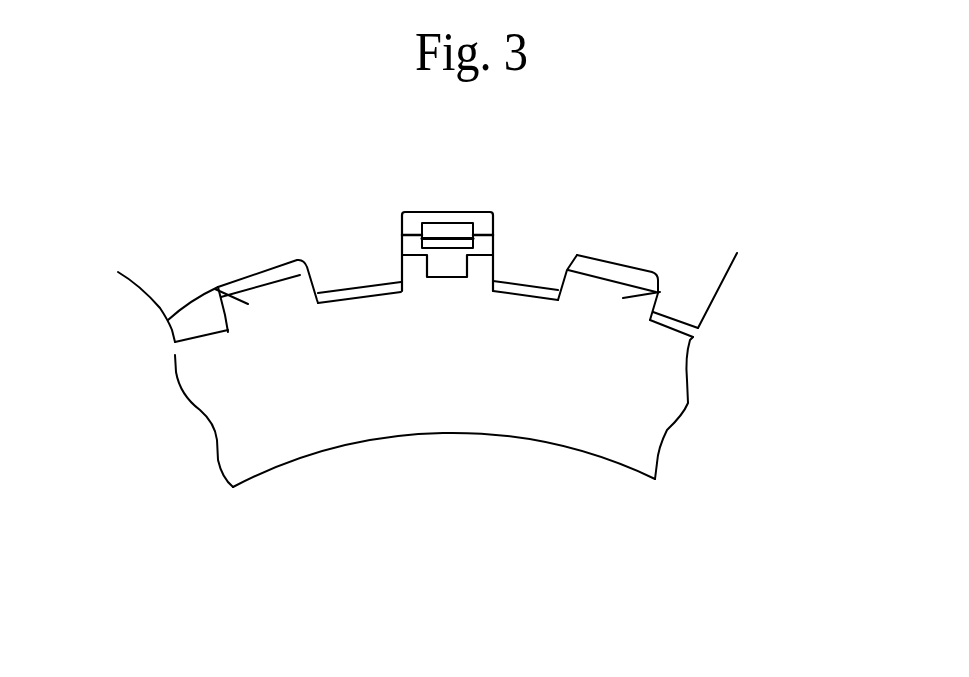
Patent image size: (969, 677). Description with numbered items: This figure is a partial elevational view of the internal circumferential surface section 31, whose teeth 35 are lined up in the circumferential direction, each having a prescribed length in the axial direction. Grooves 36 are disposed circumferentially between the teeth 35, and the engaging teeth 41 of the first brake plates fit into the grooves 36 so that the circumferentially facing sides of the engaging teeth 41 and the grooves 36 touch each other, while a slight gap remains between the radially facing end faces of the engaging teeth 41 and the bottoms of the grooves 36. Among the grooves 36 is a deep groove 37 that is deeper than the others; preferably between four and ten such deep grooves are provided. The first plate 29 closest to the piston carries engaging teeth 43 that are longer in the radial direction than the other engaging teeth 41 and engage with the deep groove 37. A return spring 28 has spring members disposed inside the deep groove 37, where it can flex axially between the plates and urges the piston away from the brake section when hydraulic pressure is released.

The return spring 28 is at (440, 230).
The first plate 29 is at (373, 412).
The internal circumferential surface section 31 is at (315, 238).
The teeth 35 is at (353, 272).
The grooves 36 is at (258, 275).
The deep groove 37 is at (480, 217).
The engaging teeth 41 is at (167, 320).
The engaging teeth 43 is at (480, 273).